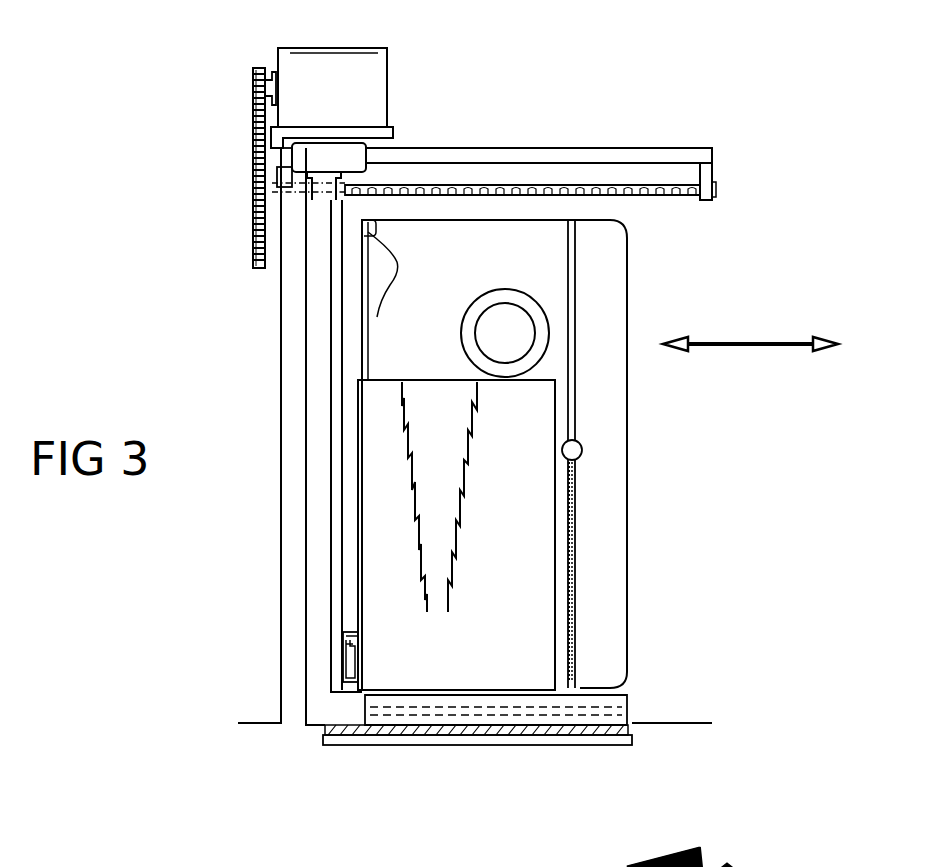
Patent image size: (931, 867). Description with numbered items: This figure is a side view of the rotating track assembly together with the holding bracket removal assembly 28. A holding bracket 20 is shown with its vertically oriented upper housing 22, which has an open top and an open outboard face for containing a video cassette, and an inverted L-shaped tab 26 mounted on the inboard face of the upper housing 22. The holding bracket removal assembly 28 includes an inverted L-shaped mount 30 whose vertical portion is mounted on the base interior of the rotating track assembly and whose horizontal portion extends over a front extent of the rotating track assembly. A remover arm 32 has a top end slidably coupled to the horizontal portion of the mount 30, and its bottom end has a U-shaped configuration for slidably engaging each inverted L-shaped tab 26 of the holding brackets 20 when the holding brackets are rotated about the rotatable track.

The holding bracket 20 is at (477, 670).
The upper housing 22 is at (502, 547).
The inverted L-shaped tab 26 is at (348, 631).
The holding bracket removal assembly 28 is at (414, 115).
The inverted L-shaped mount 30 is at (635, 148).
The remover arm 32 is at (331, 298).